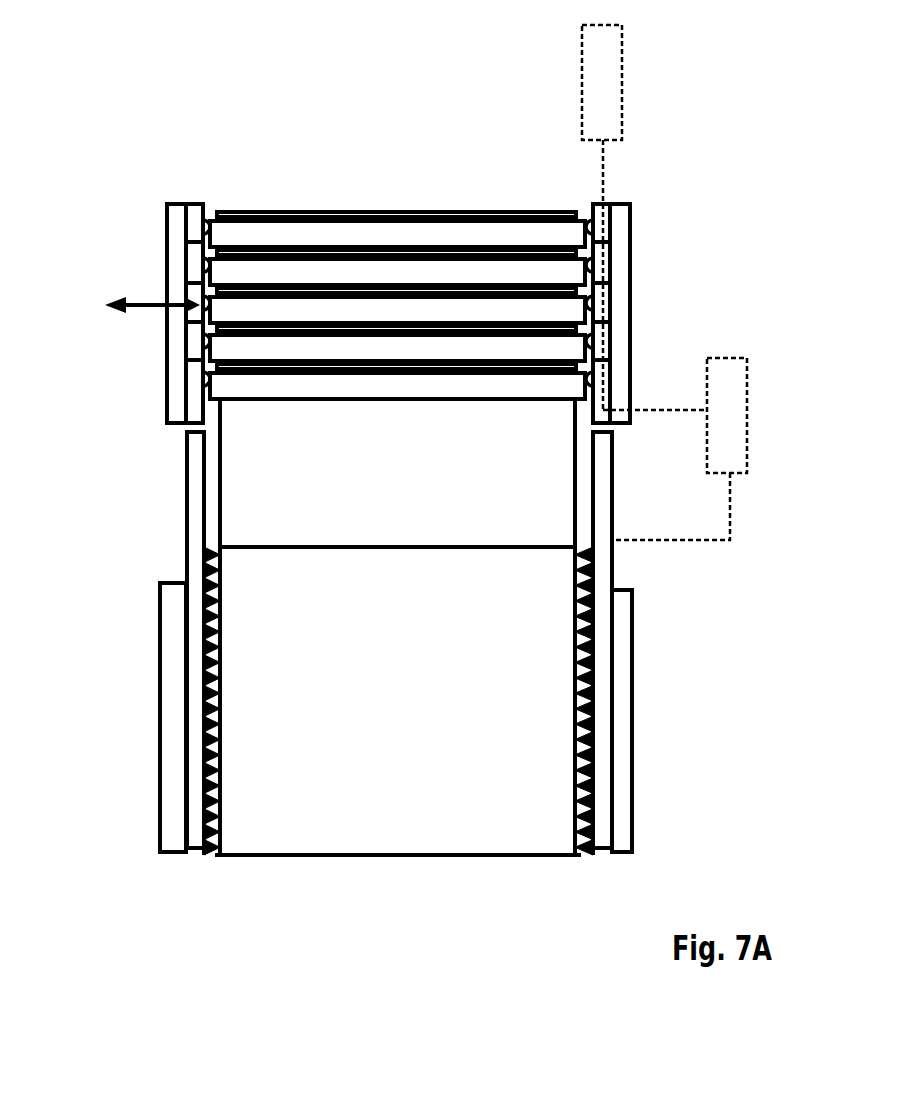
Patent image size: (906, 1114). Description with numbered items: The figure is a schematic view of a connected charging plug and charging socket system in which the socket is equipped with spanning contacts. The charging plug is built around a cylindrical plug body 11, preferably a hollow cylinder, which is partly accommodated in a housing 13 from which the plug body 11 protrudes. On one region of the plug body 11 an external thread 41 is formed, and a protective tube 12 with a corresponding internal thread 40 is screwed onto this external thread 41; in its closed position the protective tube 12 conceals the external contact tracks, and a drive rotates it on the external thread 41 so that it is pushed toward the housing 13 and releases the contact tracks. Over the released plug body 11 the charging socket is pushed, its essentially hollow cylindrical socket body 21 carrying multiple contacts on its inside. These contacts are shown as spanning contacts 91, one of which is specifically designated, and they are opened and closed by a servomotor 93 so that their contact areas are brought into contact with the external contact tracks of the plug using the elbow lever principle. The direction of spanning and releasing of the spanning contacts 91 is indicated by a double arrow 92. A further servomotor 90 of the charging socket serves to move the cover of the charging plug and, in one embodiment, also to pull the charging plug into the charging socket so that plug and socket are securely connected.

The plug body 11 is at (240, 503).
The protective tube 12 is at (193, 555).
The housing 13 is at (622, 723).
The socket body 21 is at (183, 205).
The internal thread 40 is at (223, 833).
The external thread 41 is at (225, 630).
The servomotor 90 is at (727, 357).
The spanning contacts 91 is at (190, 313).
The double arrow 92 is at (138, 298).
The servomotor 93 is at (595, 78).